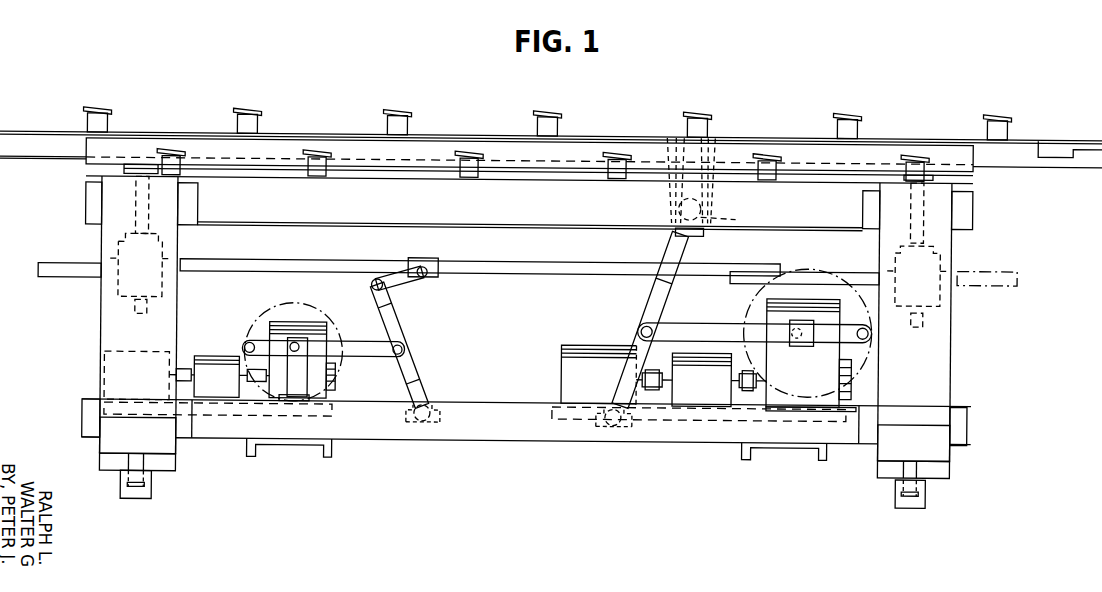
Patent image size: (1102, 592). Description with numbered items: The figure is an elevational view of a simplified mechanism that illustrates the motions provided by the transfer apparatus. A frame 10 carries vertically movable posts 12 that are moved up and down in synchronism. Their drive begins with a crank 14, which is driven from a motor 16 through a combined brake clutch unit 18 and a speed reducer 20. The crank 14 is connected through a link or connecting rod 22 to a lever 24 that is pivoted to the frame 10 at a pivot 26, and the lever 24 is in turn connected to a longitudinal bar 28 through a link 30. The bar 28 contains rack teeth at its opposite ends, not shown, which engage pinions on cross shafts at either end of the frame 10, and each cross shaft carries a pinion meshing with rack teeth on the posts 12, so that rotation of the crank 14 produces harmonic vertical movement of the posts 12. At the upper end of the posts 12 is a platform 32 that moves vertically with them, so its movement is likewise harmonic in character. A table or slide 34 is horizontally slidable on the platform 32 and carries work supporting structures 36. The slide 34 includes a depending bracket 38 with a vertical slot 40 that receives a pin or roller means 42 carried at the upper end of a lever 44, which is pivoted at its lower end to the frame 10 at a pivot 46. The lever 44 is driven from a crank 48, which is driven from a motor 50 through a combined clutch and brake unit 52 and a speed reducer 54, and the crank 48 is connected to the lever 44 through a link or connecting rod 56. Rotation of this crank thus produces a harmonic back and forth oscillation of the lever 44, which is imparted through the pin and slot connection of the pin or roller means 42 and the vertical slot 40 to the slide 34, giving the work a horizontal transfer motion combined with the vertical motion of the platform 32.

The frame 10 is at (542, 442).
The vertically movable posts 12 is at (134, 217).
The crank 14 is at (248, 344).
The motor 16 is at (105, 368).
The combined brake clutch unit 18 is at (208, 358).
The speed reducer 20 is at (300, 322).
The link or connecting rod 22 is at (352, 358).
The lever 24 is at (398, 323).
The pivot 26 is at (430, 405).
The longitudinal bar 28 is at (517, 261).
The link 30 is at (387, 258).
The platform 32 is at (83, 165).
The table or slide 34 is at (1030, 160).
The work supporting structures 36 is at (561, 118).
The depending bracket 38 is at (710, 203).
The vertical slot 40 is at (668, 199).
The pin or roller means 42 is at (735, 218).
The lever 44 is at (646, 300).
The pivot 46 is at (620, 425).
The crank 48 is at (867, 341).
The motor 50 is at (582, 345).
The combined clutch and brake unit 52 is at (712, 396).
The speed reducer 54 is at (770, 320).
The link or connecting rod 56 is at (699, 323).